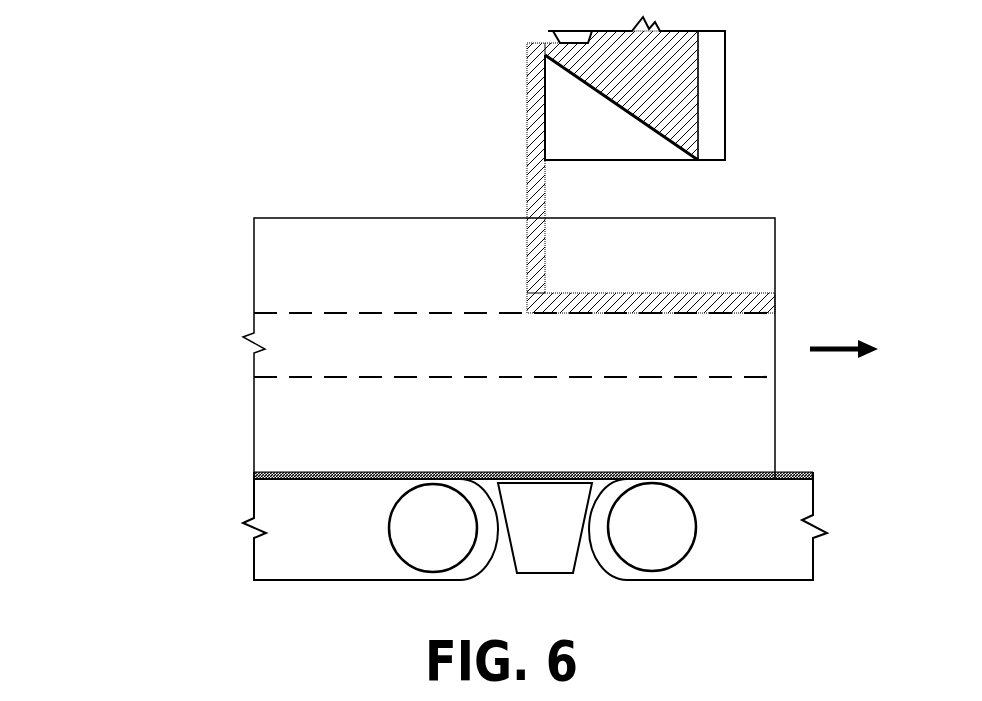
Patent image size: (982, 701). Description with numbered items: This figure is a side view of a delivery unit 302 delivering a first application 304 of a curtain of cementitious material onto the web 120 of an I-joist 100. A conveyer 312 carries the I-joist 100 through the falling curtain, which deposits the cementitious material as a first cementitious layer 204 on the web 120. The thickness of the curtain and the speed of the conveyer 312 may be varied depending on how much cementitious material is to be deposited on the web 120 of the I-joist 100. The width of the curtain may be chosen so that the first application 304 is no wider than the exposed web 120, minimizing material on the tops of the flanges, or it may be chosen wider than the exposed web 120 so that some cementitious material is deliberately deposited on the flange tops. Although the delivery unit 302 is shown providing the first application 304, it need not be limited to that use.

The I-joist 100 is at (125, 252).
The web 120 is at (514, 345).
The first cementitious layer 204 is at (722, 295).
The delivery unit 302 is at (492, 53).
The first application 304 is at (526, 183).
The conveyer 312 is at (545, 527).